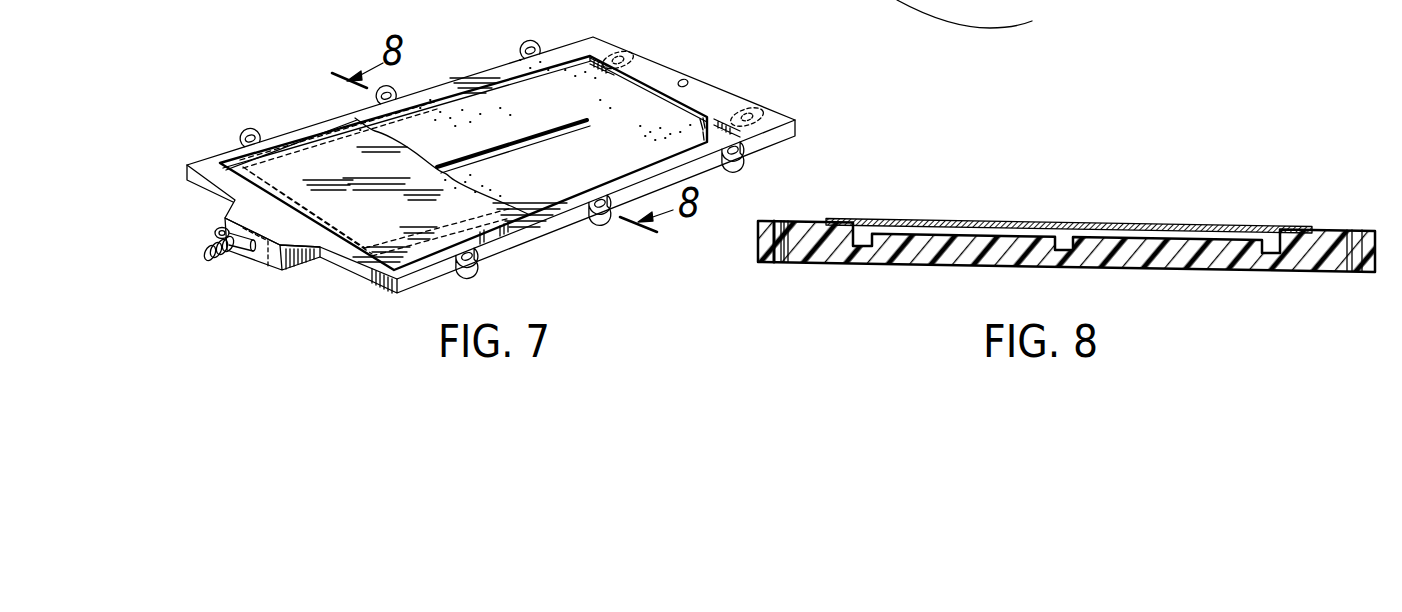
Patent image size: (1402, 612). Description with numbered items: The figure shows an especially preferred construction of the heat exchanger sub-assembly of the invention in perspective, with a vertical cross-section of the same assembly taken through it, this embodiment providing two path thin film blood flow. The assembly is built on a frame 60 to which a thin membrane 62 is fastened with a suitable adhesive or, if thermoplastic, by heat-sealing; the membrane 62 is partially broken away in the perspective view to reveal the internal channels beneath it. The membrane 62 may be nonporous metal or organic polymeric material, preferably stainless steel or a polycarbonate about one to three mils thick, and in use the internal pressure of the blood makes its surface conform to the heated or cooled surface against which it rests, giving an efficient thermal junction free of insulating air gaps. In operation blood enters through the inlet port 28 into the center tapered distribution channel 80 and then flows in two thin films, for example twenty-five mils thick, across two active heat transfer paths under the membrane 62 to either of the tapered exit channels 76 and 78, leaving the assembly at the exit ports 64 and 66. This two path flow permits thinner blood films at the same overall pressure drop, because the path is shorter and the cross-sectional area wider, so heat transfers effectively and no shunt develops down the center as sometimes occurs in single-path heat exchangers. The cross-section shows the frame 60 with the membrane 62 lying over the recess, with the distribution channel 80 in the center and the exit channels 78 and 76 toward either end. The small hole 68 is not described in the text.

In FIG. 7, the inlet port 28 is at (211, 260).
In FIG. 7, the frame 60 is at (704, 162).
In FIG. 8, the frame 60 is at (838, 248).
In FIG. 7, the membrane 62 is at (320, 158).
In FIG. 8, the membrane 62 is at (968, 204).
In FIG. 7, the exit port 64 is at (630, 52).
In FIG. 7, the exit port 66 is at (766, 106).
In FIG. 7, the hole 68 is at (690, 80).
In FIG. 7, the tapered exit channel 76 is at (513, 85).
In FIG. 8, the tapered exit channel 76 is at (1273, 238).
In FIG. 7, the tapered exit channel 78 is at (742, 152).
In FIG. 8, the tapered exit channel 78 is at (866, 237).
In FIG. 7, the center tapered distribution channel 80 is at (323, 208).
In FIG. 8, the center tapered distribution channel 80 is at (1071, 240).